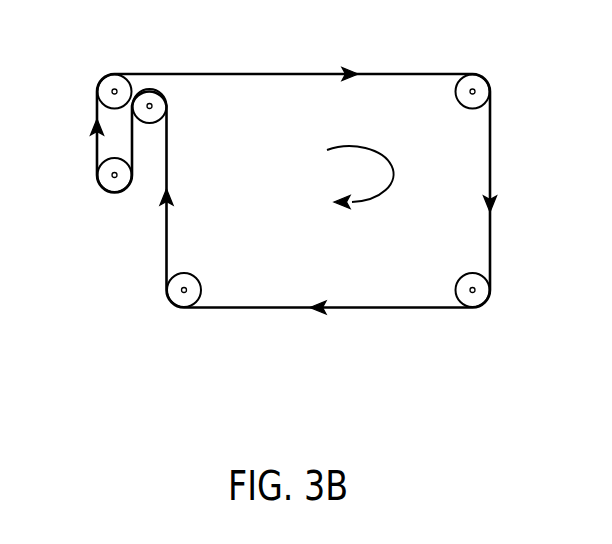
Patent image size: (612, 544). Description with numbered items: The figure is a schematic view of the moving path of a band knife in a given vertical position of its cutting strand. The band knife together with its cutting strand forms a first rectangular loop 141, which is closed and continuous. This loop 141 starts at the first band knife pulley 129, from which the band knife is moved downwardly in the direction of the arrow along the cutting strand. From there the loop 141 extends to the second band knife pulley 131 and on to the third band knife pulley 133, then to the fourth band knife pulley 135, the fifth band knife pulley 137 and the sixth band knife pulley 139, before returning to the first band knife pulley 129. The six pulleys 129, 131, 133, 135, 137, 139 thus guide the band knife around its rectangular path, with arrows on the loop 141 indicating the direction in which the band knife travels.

The first band knife pulley 129 is at (476, 76).
The second band knife pulley 131 is at (480, 295).
The third band knife pulley 133 is at (175, 300).
The fourth band knife pulley 135 is at (155, 98).
The fifth band knife pulley 137 is at (108, 180).
The sixth band knife pulley 139 is at (106, 82).
The first rectangular loop 141 is at (295, 198).